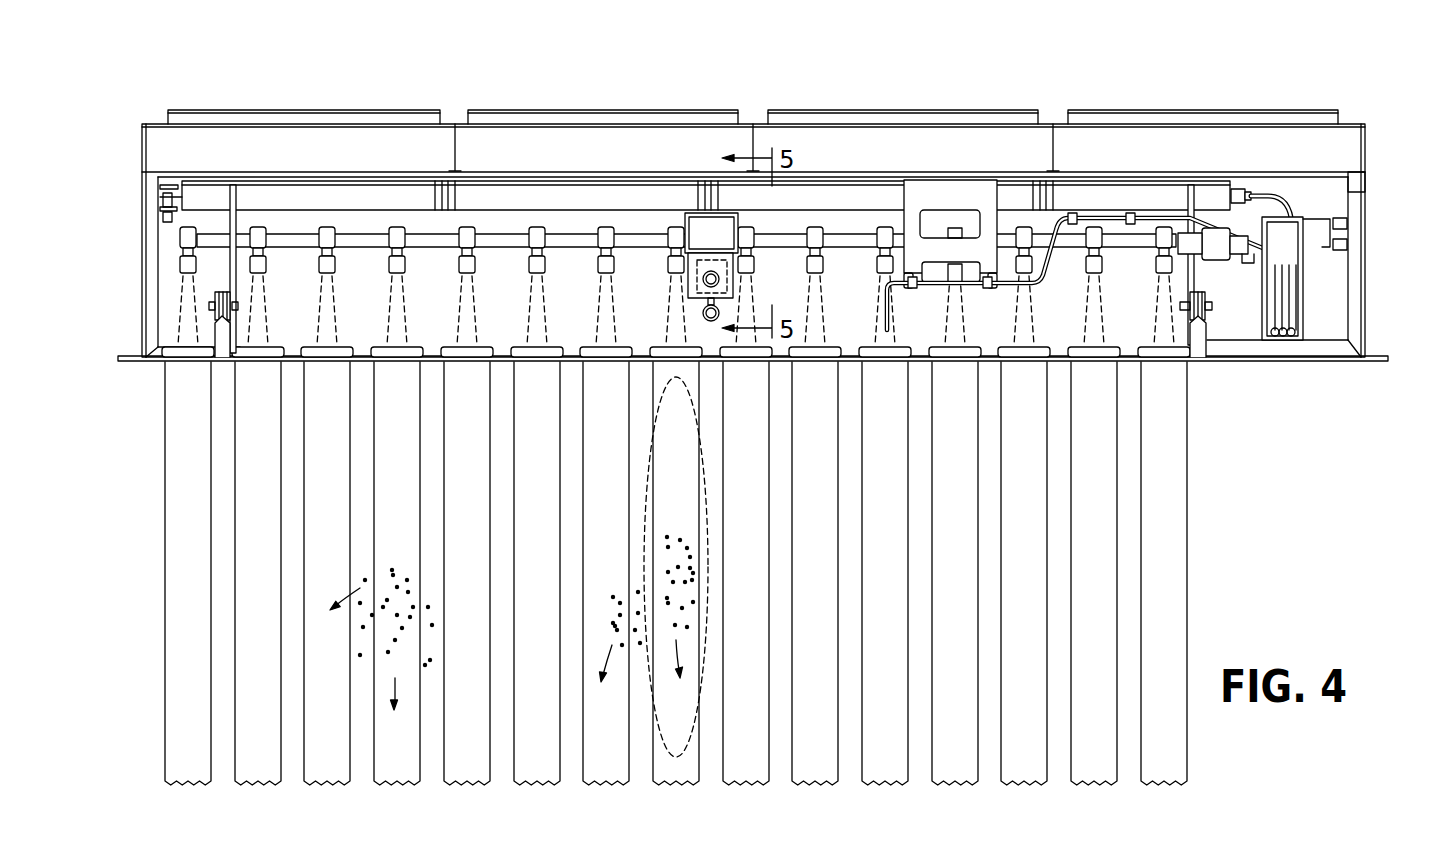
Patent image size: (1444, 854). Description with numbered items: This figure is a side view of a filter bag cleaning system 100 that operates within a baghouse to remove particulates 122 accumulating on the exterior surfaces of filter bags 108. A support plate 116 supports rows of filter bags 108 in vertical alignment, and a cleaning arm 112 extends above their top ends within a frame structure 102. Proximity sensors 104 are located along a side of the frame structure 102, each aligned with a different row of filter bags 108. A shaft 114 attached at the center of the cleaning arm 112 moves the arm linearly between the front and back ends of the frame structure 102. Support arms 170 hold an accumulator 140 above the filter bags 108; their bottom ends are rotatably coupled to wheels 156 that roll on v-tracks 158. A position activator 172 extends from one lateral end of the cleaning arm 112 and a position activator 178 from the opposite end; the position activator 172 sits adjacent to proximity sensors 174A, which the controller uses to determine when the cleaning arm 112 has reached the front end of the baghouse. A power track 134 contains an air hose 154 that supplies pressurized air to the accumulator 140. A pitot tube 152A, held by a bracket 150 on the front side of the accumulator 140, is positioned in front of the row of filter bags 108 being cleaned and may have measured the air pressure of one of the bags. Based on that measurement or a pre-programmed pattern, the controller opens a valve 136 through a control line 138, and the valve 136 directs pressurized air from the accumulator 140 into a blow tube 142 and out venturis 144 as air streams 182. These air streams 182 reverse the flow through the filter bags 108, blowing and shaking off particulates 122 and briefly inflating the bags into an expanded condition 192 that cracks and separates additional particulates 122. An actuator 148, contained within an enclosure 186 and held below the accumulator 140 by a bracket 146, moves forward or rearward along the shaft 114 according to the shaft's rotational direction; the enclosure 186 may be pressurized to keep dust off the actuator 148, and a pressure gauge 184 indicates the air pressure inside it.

The cleaning system 100 is at (960, 86).
The frame structure 102 is at (1205, 118).
The proximity sensor 104 is at (178, 197).
The filter bag 108 is at (1187, 570).
The cleaning arm 112 is at (852, 177).
The shaft 114 is at (720, 279).
The support plate 116 is at (432, 363).
The particulates 122 is at (398, 568).
The power track 134 is at (1305, 322).
The valve 136 is at (1218, 261).
The control line 138 is at (1278, 267).
The accumulator 140 is at (400, 190).
The blow tube 142 is at (500, 244).
The venturi 144 is at (407, 263).
The bracket 146 is at (675, 213).
The actuator 148 is at (700, 282).
The bracket 150 is at (998, 197).
The pitot tube 152A is at (1108, 214).
The air hose 154 is at (1268, 196).
The wheel 156 is at (232, 282).
The v-track 158 is at (232, 325).
The support arm 170 is at (236, 198).
The position activator 172 is at (1312, 232).
The proximity sensor 174A is at (1345, 263).
The position activator 178 is at (170, 184).
The air stream 182 is at (388, 320).
The pressure gauge 184 is at (708, 320).
The enclosure 186 is at (705, 313).
The expanded condition 192 is at (643, 497).